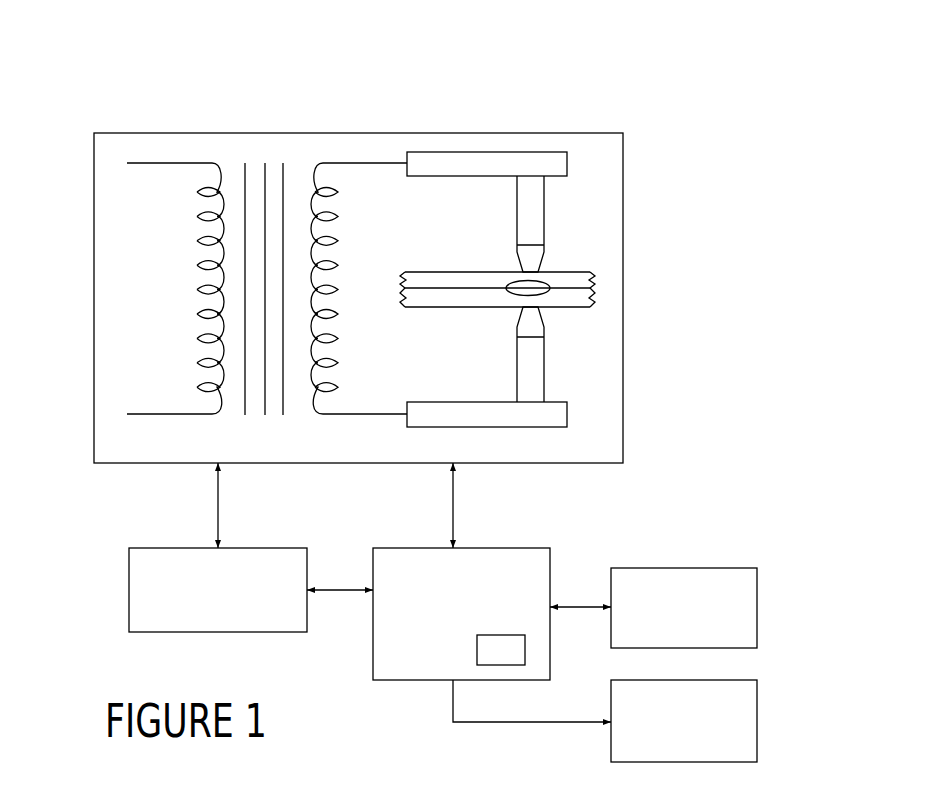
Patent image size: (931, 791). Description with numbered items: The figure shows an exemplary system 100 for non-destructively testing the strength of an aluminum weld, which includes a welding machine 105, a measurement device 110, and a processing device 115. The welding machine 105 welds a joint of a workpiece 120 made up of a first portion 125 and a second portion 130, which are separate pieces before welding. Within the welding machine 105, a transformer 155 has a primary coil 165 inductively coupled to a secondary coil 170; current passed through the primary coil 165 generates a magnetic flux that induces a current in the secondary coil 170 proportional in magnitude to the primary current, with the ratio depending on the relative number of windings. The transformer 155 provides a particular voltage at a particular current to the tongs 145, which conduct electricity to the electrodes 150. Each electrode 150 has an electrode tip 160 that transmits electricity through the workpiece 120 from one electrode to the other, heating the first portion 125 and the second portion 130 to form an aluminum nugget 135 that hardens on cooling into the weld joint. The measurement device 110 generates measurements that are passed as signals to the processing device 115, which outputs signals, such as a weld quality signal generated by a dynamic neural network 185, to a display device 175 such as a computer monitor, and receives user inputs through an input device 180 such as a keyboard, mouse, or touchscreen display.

The system 100 is at (732, 178).
The welding machine 105 is at (93, 252).
The measurement device 110 is at (129, 592).
The processing device 115 is at (471, 616).
The workpiece 120 is at (507, 280).
The first portion 125 is at (478, 270).
The second portion 130 is at (478, 308).
The aluminum nugget 135 is at (550, 295).
The tongs 145 is at (567, 162).
The electrodes 150 is at (578, 289).
The transformer 155 is at (268, 425).
The electrode tip 160 is at (517, 252).
The primary coil 165 is at (179, 280).
The secondary coil 170 is at (338, 253).
The display device 175 is at (683, 568).
The input device 180 is at (757, 725).
The dynamic neural network 185 is at (477, 648).